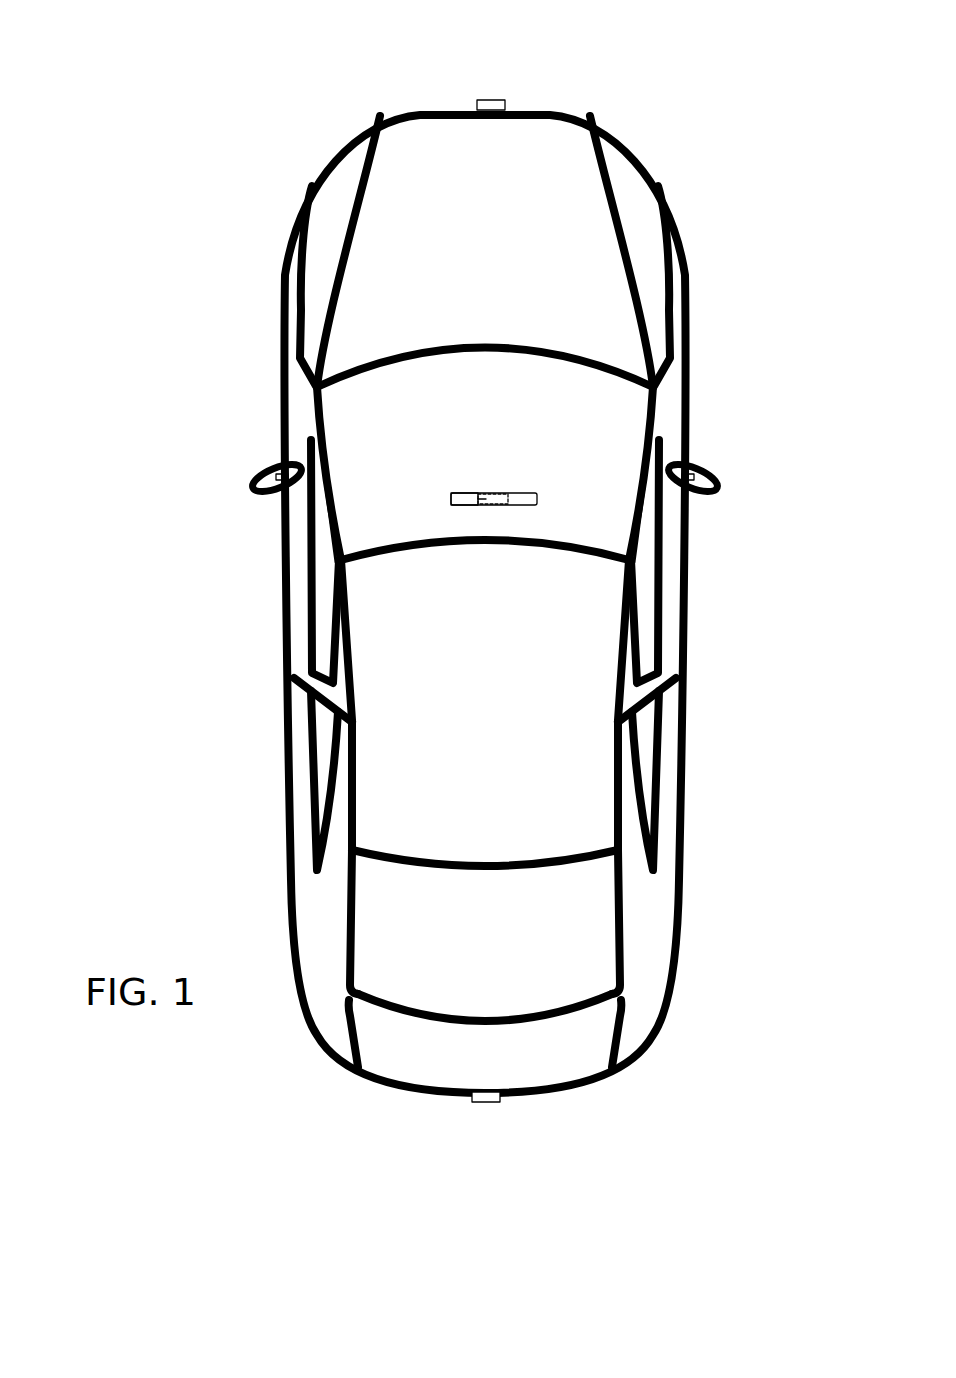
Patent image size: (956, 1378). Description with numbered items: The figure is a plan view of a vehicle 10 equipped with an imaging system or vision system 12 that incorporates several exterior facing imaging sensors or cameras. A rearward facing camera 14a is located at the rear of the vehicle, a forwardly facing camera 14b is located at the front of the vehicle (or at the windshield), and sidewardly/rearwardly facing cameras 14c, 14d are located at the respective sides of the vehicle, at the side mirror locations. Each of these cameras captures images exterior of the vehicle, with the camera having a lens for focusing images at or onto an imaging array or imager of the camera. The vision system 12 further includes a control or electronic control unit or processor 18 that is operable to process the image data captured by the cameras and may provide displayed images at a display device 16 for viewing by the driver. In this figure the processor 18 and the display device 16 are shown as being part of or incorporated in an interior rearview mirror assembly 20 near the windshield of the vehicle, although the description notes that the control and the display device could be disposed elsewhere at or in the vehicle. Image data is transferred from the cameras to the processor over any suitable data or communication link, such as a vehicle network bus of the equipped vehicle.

The vehicle 10 is at (236, 203).
The vision system 12 is at (435, 1124).
The rearward facing camera 14a is at (488, 1100).
The forwardly facing camera 14b is at (498, 99).
The sidewardly/rearwardly facing camera 14c is at (276, 476).
The sidewardly/rearwardly facing camera 14d is at (694, 476).
The display device 16 is at (466, 493).
The processor 18 is at (489, 492).
The interior rearview mirror assembly 20 is at (536, 493).